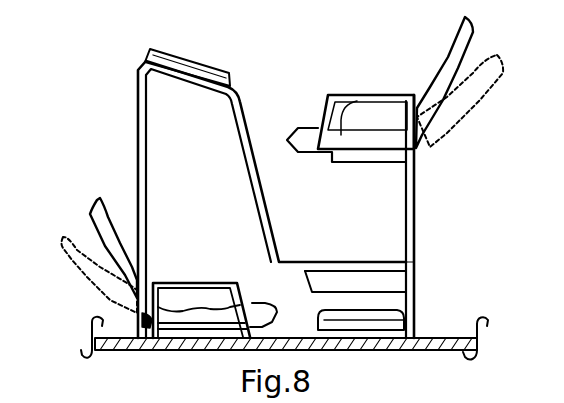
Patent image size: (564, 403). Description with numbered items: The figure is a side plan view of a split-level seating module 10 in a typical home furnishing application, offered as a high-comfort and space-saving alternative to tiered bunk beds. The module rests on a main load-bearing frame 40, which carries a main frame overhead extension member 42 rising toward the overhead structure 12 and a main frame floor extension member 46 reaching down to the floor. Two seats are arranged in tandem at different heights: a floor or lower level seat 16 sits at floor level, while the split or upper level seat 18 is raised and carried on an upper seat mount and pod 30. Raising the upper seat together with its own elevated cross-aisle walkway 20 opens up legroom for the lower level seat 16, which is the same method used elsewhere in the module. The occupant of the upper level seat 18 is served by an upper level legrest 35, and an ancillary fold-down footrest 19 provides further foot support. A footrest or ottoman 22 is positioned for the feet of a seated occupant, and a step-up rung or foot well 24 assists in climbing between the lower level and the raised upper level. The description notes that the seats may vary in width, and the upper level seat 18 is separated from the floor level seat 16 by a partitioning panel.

The split-level seating module 10 is at (405, 58).
The overhead structure 12 is at (296, 360).
The floor or lower level seat 16 is at (208, 300).
The split or upper level seat 18 is at (357, 101).
The ancillary fold-down footrest 19 is at (328, 160).
The elevated cross-aisle walkway 20 is at (308, 248).
The footrest or ottoman 22 is at (333, 308).
The step-up rung or foot well 24 is at (275, 280).
The upper seat mount and pod 30 is at (424, 193).
The upper level legrest 35 is at (190, 66).
The main load-bearing frame 40 is at (248, 206).
The main frame overhead extension member 42 is at (237, 119).
The main frame floor extension member 46 is at (414, 265).